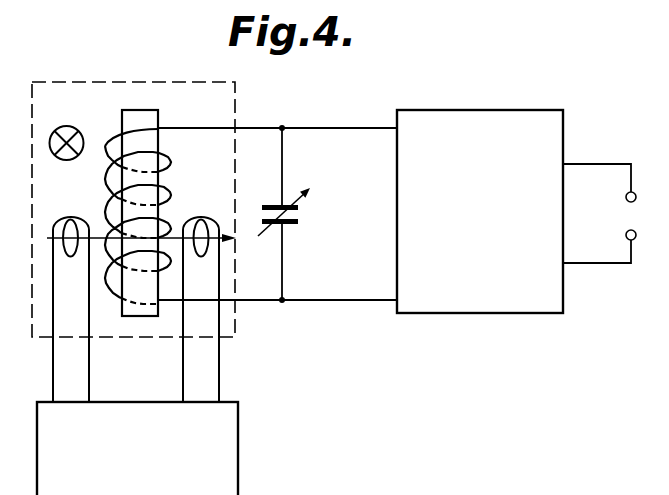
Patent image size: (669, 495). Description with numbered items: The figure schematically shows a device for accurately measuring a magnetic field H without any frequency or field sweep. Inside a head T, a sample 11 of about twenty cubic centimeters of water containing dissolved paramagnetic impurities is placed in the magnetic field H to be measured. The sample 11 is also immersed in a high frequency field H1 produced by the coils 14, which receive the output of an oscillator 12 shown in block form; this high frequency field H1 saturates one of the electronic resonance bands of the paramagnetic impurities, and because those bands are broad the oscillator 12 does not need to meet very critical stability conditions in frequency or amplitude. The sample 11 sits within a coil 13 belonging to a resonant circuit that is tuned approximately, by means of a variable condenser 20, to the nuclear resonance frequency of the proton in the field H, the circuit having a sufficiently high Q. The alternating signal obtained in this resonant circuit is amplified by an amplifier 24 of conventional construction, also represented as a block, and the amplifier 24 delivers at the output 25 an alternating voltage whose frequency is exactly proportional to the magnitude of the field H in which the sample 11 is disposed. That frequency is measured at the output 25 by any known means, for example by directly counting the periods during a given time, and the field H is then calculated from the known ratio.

The head T is at (148, 82).
The magnetic field H is at (68, 127).
The sample 11 is at (148, 122).
The coil 13 is at (107, 189).
The coils 14 is at (65, 221).
The high frequency field H1 is at (230, 239).
The variable condenser 20 is at (299, 221).
The amplifier 24 is at (480, 127).
The output 25 is at (630, 212).
The oscillator 12 is at (238, 424).